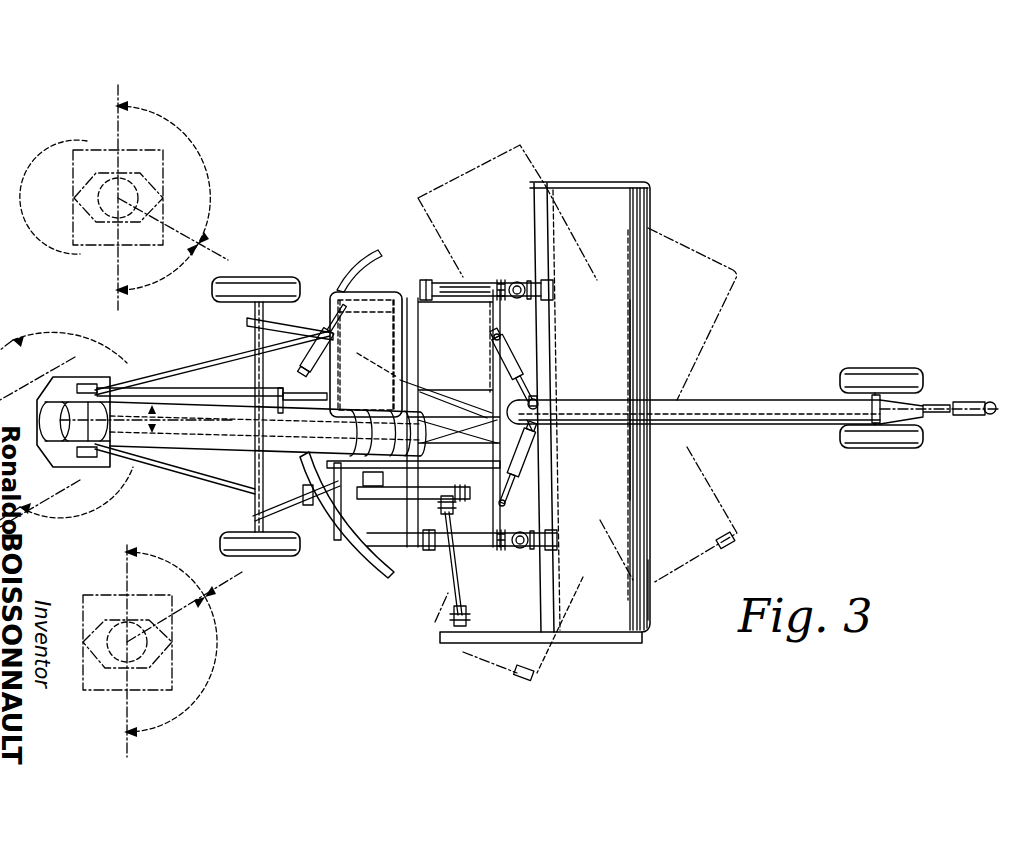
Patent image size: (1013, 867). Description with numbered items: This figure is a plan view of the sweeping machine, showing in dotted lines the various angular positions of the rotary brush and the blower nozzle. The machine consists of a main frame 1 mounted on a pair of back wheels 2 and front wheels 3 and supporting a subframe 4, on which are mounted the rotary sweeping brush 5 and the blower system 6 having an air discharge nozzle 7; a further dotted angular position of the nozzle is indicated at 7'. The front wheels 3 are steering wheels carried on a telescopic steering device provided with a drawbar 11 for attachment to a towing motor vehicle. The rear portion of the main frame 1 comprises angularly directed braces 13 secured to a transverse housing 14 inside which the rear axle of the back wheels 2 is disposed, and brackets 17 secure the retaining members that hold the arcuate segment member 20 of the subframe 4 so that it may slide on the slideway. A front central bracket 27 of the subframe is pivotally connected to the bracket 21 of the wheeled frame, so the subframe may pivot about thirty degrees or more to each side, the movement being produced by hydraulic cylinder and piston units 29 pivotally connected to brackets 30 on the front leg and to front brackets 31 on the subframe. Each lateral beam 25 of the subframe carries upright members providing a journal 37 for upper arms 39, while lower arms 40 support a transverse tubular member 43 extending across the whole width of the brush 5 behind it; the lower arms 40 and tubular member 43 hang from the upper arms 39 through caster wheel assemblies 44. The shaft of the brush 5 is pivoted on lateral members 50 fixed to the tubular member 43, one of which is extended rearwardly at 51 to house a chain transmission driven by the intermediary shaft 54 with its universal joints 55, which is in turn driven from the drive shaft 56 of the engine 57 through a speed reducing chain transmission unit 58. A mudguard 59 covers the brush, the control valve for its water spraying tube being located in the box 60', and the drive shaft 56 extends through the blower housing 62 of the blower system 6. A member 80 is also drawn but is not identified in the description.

The main frame 1 is at (247, 496).
The back wheels 2 is at (272, 288).
The front wheels 3 is at (870, 383).
The subframe 4 is at (360, 570).
The rotary sweeping brush 5 is at (652, 592).
The blower system 6 is at (226, 462).
The air discharge nozzle 7 is at (129, 421).
The hex nut position 7' is at (149, 700).
The drawbar 11 is at (930, 405).
The braces 13 is at (266, 331).
The transverse housing 14 is at (252, 340).
The brackets 17 is at (308, 506).
The arcuate segment member 20 is at (340, 545).
The bracket 21 is at (537, 398).
The lateral beams 25 is at (470, 292).
The front central bracket 27 is at (517, 430).
The hydraulic cylinder and piston units 29 is at (520, 360).
The brackets 30 is at (535, 405).
The front brackets 31 is at (500, 340).
The journal 37 is at (422, 551).
The upper arms 39 is at (422, 290).
The lower arms 40 is at (548, 262).
The transverse tubular member 43 is at (540, 206).
The caster wheel assemblies 44 is at (518, 283).
The lateral members 50 is at (588, 190).
The rearward extension 51 is at (500, 634).
The intermediary shaft 54 is at (458, 563).
The universal joints 55 is at (455, 506).
The drive shaft 56 is at (372, 483).
The engine 57 is at (396, 344).
The speed reducing chain transmission unit 58 is at (388, 498).
The mudguard 59 is at (615, 350).
The box 60' is at (465, 277).
The blower housing 62 is at (350, 492).
The upper frame bar 80 is at (172, 408).